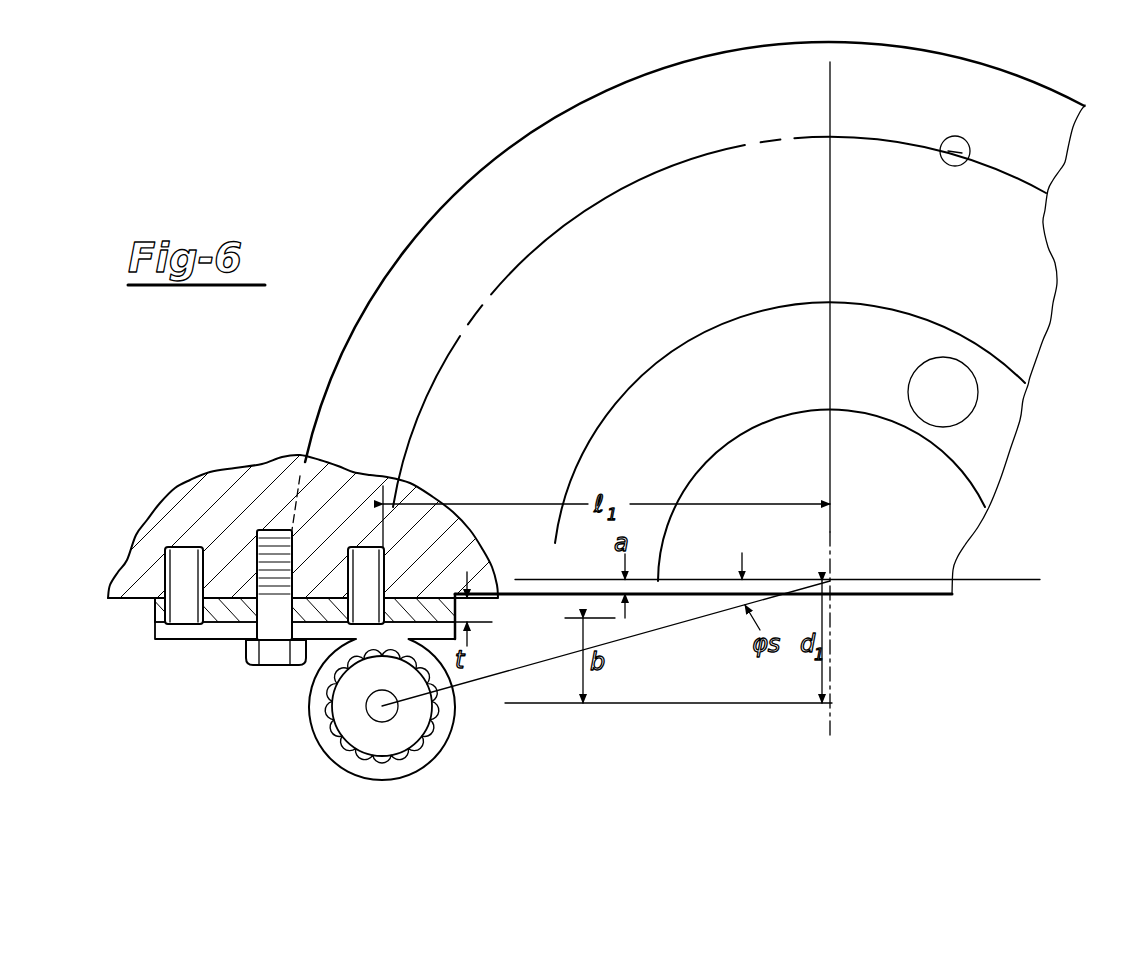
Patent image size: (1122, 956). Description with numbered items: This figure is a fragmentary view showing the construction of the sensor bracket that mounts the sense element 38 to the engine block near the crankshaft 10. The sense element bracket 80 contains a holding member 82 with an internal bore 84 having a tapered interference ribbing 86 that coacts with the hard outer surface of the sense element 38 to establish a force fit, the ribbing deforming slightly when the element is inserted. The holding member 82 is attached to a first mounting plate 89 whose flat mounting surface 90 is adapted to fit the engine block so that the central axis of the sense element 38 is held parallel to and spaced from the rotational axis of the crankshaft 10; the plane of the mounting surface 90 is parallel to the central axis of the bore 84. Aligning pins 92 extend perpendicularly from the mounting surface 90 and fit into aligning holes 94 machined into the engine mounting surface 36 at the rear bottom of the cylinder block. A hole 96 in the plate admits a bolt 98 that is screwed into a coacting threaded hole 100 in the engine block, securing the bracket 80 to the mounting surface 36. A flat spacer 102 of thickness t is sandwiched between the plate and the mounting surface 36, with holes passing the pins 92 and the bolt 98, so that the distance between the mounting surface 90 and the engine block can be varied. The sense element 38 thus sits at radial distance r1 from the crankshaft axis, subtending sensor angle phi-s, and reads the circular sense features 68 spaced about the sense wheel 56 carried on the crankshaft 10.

The crankshaft 10 is at (916, 497).
The engine mounting surface 36 is at (106, 599).
The sense element 38 is at (394, 690).
The sense wheel 56 is at (572, 118).
The circular sense features 68 is at (966, 142).
The sense element bracket 80 is at (352, 709).
The holding member 82 is at (312, 697).
The internal bore 84 is at (333, 742).
The tapered interference ribbing 86 is at (432, 712).
The first mounting plate 89 is at (156, 630).
The flat mounting surface 90 is at (217, 622).
The aligning pins 92 is at (182, 568).
The aligning holes 94 is at (246, 548).
The hole 96 is at (268, 630).
The bolt 98 is at (262, 664).
The threaded hole 100 is at (312, 422).
The flat spacer 102 is at (150, 615).